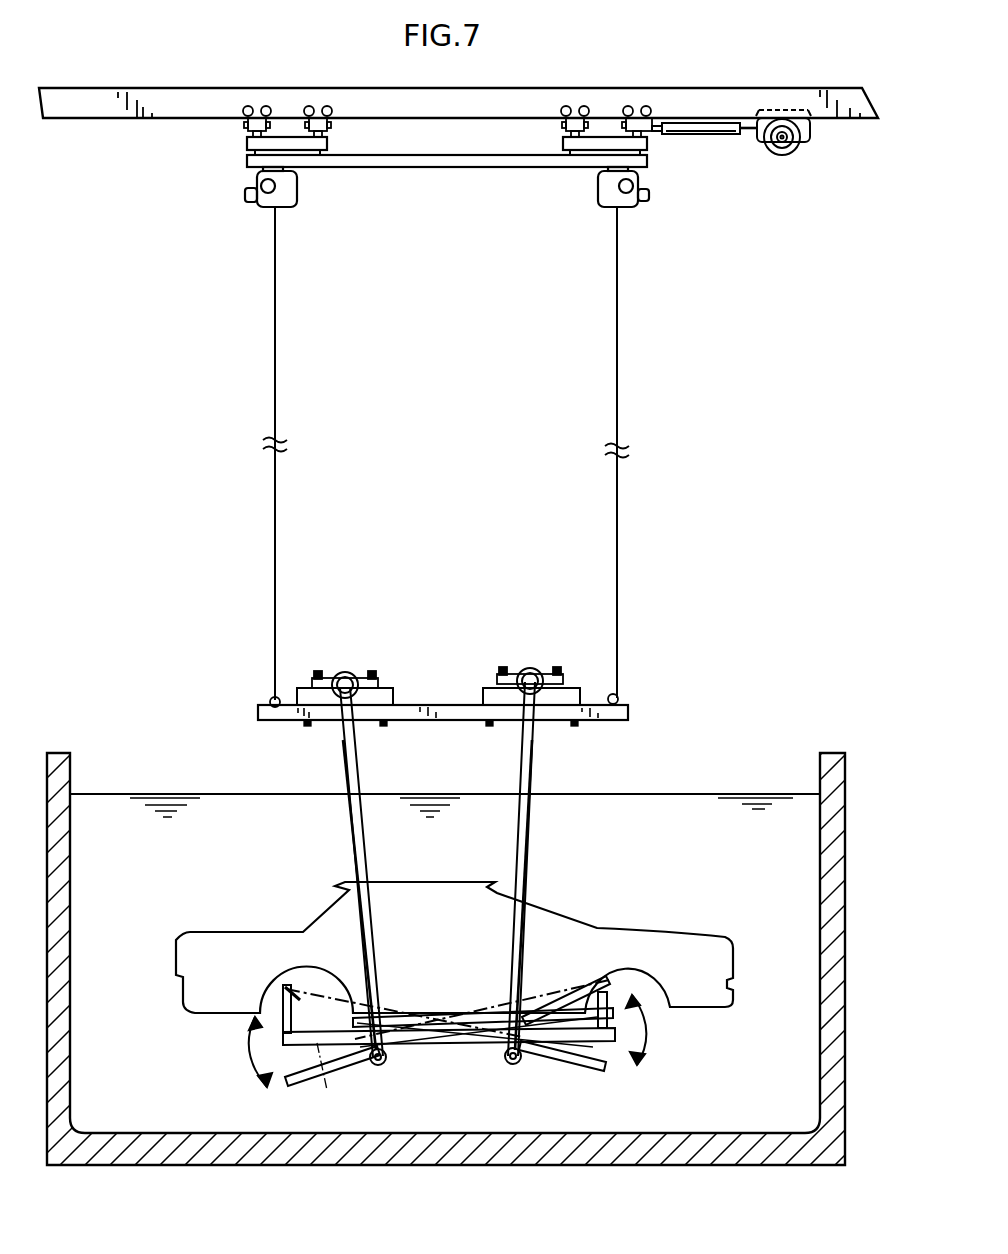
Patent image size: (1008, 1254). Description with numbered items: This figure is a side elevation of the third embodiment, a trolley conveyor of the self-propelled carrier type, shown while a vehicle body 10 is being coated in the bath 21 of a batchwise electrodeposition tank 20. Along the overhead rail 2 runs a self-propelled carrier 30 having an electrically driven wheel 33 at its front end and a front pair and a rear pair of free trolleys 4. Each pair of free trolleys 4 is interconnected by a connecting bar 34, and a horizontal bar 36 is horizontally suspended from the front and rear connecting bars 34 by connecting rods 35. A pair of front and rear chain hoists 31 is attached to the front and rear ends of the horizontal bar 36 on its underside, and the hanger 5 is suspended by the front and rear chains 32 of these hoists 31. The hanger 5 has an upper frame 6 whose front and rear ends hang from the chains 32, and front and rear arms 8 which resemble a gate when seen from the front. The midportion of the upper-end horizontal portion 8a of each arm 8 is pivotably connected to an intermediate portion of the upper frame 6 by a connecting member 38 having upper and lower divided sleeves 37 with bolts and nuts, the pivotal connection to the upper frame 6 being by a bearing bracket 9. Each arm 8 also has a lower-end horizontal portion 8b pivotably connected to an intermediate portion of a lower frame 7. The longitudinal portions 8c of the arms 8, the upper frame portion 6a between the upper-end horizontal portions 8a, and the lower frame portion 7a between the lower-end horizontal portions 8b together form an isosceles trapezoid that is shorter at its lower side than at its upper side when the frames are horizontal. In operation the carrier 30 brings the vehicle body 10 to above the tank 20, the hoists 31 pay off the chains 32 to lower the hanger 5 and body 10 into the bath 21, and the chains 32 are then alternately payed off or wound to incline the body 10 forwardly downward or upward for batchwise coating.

The overhead rail 2 is at (715, 100).
The free trolley 4 is at (257, 113).
The hanger 5 is at (525, 850).
The upper frame 6 is at (448, 720).
The upper frame portion 6a is at (393, 722).
The lower frame 7 is at (337, 1015).
The lower frame portion 7a is at (453, 1047).
The arm 8 is at (348, 763).
The upper-end horizontal portion 8a is at (345, 677).
The lower-end horizontal portion 8b is at (378, 1065).
The longitudinal portion 8c is at (358, 853).
The bearing bracket 9 is at (390, 1063).
The vehicle body 10 is at (605, 930).
The electrodeposition tank 20 is at (62, 752).
The bath 21 is at (178, 794).
The self-propelled carrier 30 is at (706, 162).
The chain hoist 31 is at (255, 184).
The chain 32 is at (275, 313).
The electrically driven wheel 33 is at (793, 153).
The connecting bar 34 is at (327, 143).
The connecting rod 35 is at (287, 152).
The horizontal bar 36 is at (442, 163).
The divided sleeve 37 is at (342, 665).
The connecting member 38 is at (385, 688).